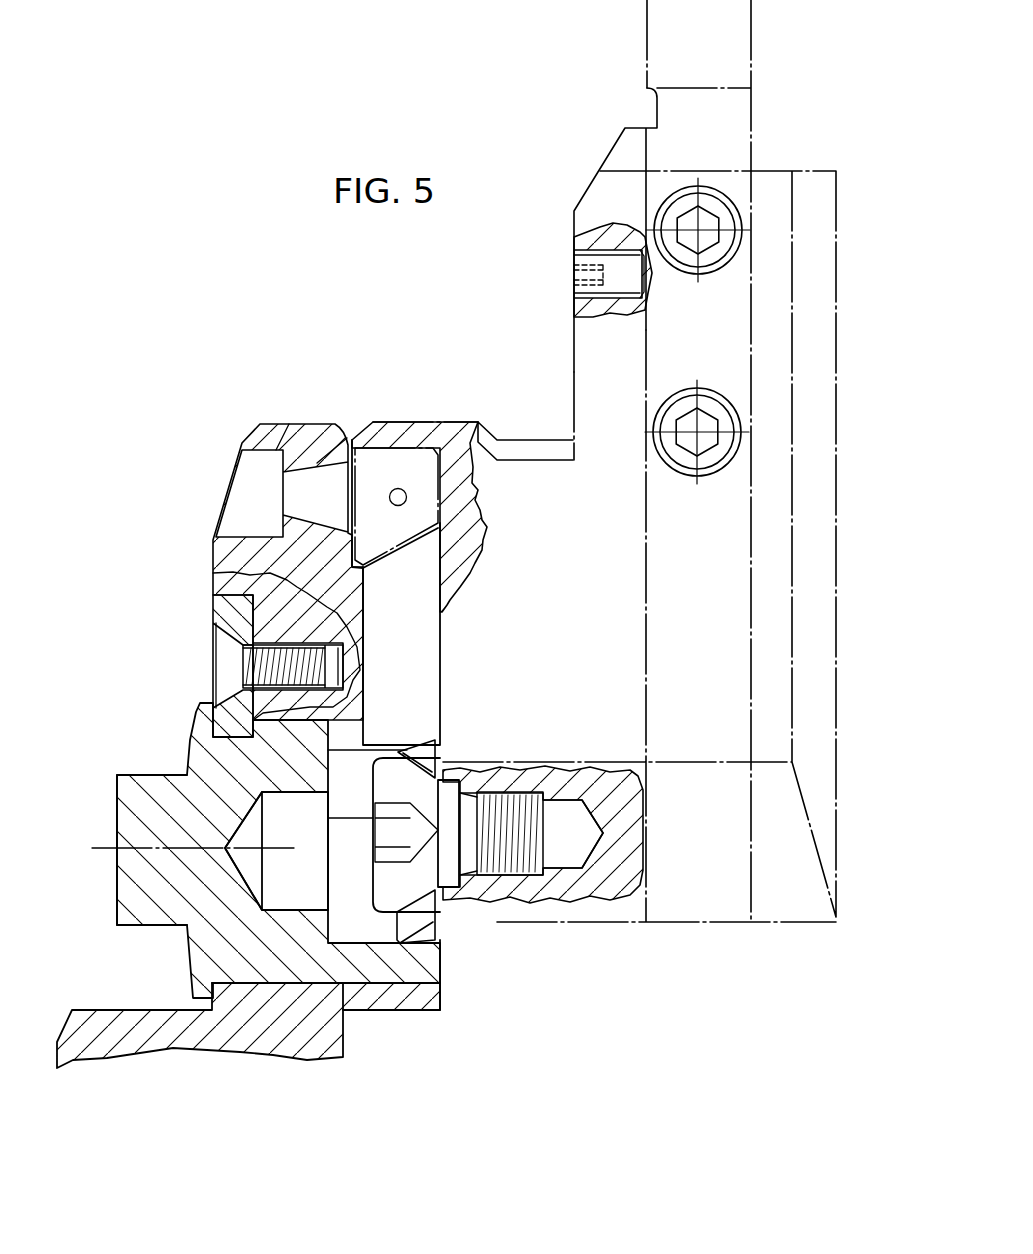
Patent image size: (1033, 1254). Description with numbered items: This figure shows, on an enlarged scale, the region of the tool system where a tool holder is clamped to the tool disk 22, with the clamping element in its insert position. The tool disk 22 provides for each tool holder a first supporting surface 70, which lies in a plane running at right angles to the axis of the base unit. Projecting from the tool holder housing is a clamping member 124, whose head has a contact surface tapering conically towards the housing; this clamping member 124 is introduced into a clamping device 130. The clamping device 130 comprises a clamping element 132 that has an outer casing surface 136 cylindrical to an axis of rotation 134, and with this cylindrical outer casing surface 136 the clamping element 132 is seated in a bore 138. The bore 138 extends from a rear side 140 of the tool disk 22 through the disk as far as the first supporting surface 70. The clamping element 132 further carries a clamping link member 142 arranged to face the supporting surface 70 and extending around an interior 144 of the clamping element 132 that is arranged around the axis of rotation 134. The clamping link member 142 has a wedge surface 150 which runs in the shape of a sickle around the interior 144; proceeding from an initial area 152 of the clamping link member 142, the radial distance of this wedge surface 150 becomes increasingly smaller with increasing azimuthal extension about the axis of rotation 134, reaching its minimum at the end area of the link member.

The tool disk 22 is at (238, 557).
The first supporting surface 70 is at (443, 633).
The clamping member 124 is at (443, 907).
The clamping device 130 is at (364, 972).
The clamping element 132 is at (215, 950).
The axis of rotation 134 is at (137, 848).
The outer casing surface 136 is at (317, 983).
The bore 138 is at (278, 977).
The rear side 140 is at (213, 575).
The clamping link member 142 is at (417, 913).
The interior 144 is at (308, 891).
The wedge surface 150 is at (425, 928).
The initial area 152 is at (420, 753).